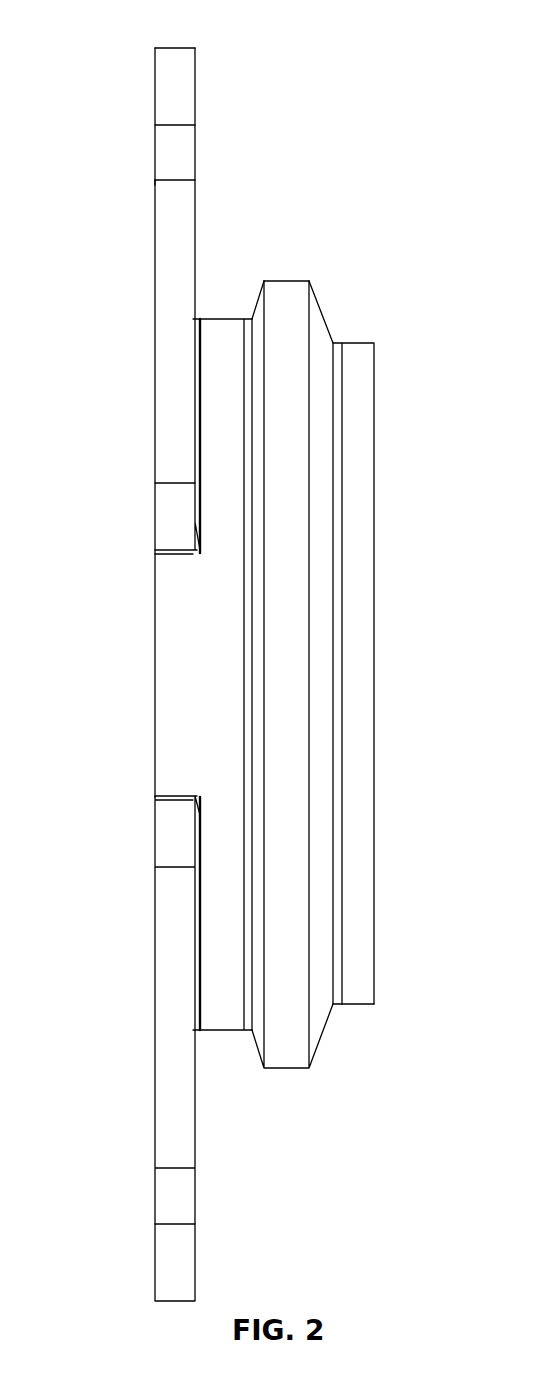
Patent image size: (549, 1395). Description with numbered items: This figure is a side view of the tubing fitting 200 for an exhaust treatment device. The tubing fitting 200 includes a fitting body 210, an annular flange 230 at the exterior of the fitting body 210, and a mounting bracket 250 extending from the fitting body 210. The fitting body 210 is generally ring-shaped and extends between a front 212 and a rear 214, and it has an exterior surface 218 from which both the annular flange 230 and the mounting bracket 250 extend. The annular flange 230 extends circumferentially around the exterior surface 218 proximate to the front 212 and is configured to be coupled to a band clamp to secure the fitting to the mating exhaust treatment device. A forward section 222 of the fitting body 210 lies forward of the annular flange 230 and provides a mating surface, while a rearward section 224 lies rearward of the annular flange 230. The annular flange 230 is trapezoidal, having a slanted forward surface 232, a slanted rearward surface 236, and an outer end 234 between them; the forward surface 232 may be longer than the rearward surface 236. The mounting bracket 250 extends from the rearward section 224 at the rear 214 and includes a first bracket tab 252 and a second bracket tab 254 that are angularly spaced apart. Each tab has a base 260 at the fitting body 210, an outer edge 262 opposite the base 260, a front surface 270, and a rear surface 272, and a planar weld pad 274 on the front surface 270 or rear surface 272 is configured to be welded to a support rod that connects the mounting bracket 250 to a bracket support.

The tubing fitting 200 is at (330, 101).
The mounting bracket 250 is at (139, 1218).
The outer edge 262 is at (175, 47).
The first bracket tab 252 is at (183, 93).
The front surface 270 is at (197, 155).
The weld pad 274 is at (155, 172).
The rear surface 272 is at (156, 270).
The base 260 is at (163, 515).
The fitting body 210 is at (163, 600).
The rear 214 is at (157, 831).
The second bracket tab 254 is at (188, 1256).
The exterior surface 218 is at (219, 1013).
The rearward section 224 is at (237, 1031).
The annular flange 230 is at (296, 341).
The outer end 234 is at (288, 279).
The rearward surface 236 is at (255, 305).
The forward surface 232 is at (316, 295).
The front 212 is at (375, 935).
The forward section 222 is at (355, 1006).